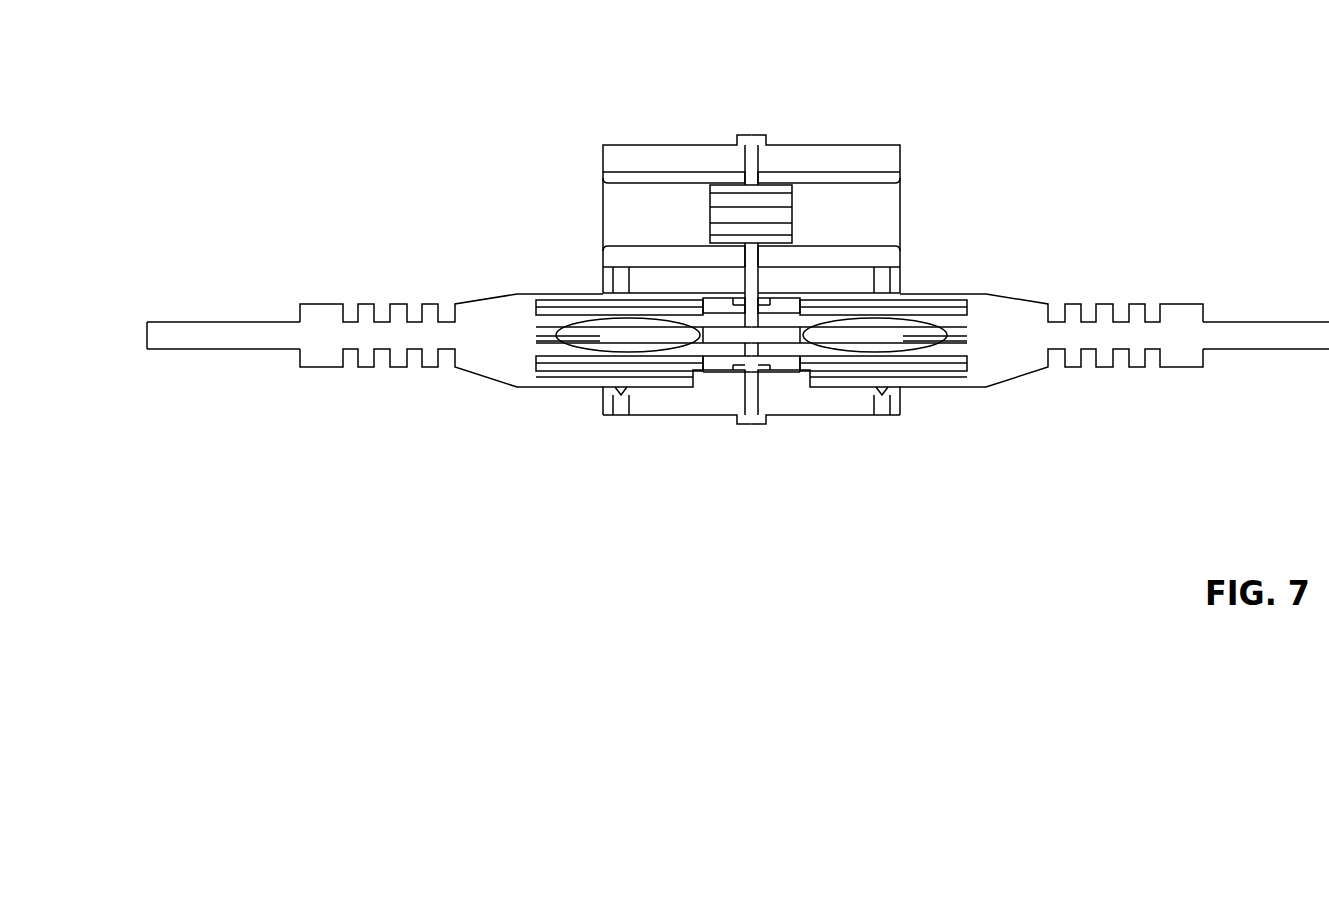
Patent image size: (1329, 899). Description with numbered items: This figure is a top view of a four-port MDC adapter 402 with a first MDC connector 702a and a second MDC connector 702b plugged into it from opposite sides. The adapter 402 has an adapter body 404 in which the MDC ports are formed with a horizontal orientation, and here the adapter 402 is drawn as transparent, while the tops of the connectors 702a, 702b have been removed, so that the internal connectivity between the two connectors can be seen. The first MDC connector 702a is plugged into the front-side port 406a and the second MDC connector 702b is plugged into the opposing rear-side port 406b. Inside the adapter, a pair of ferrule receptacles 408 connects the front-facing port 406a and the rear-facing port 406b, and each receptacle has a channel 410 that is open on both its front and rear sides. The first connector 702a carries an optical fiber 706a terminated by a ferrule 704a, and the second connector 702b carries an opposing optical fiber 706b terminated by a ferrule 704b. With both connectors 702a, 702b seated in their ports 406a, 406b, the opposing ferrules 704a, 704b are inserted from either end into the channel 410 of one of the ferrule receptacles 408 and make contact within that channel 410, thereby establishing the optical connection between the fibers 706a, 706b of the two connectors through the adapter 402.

The MDC adapter 402 is at (738, 314).
The adapter body 404 is at (853, 143).
The front-side port 406a is at (600, 292).
The rear-side port 406b is at (905, 292).
The ferrule receptacle 408 is at (755, 352).
The channel 410 is at (675, 456).
The first MDC connector 702a is at (505, 315).
The second MDC connector 702b is at (980, 300).
The ferrule 704a is at (728, 352).
The ferrule 704b is at (763, 350).
The optical fiber 706a is at (620, 352).
The optical fiber 706b is at (883, 350).